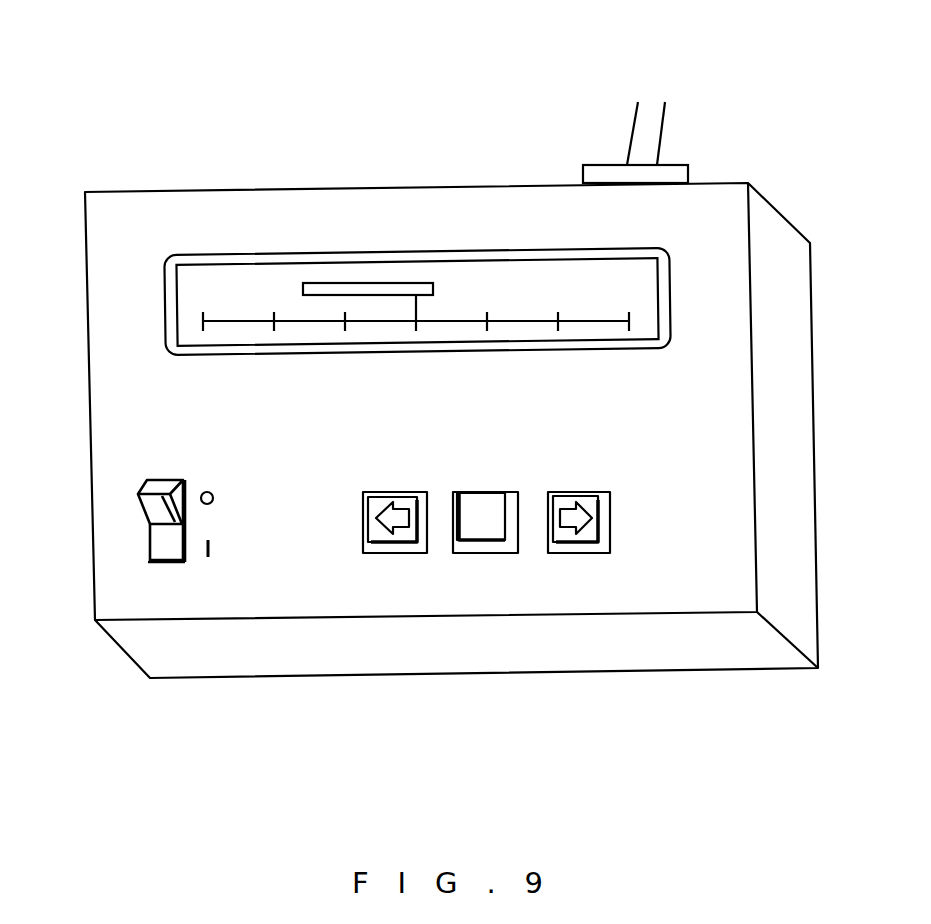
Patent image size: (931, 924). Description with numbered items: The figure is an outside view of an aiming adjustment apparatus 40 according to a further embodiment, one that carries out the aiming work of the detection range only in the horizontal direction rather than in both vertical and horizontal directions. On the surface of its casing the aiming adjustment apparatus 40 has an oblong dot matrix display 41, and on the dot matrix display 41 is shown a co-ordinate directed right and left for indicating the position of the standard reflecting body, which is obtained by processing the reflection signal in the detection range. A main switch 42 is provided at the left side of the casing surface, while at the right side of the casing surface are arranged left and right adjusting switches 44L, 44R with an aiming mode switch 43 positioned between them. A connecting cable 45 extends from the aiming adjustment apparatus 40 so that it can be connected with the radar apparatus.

The aiming adjustment apparatus 40 is at (190, 133).
The oblong dot matrix display 41 is at (463, 280).
The main switch 42 is at (153, 507).
The aiming mode switch 43 is at (477, 557).
The left adjusting switch 44L is at (378, 557).
The right adjusting switch 44R is at (587, 557).
The connecting cable 45 is at (655, 142).